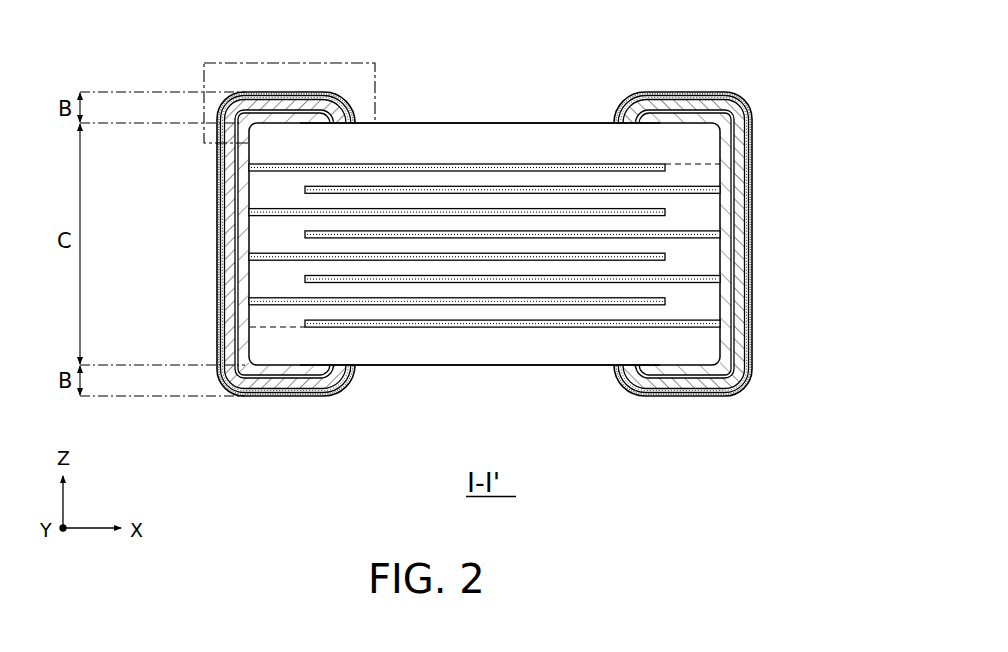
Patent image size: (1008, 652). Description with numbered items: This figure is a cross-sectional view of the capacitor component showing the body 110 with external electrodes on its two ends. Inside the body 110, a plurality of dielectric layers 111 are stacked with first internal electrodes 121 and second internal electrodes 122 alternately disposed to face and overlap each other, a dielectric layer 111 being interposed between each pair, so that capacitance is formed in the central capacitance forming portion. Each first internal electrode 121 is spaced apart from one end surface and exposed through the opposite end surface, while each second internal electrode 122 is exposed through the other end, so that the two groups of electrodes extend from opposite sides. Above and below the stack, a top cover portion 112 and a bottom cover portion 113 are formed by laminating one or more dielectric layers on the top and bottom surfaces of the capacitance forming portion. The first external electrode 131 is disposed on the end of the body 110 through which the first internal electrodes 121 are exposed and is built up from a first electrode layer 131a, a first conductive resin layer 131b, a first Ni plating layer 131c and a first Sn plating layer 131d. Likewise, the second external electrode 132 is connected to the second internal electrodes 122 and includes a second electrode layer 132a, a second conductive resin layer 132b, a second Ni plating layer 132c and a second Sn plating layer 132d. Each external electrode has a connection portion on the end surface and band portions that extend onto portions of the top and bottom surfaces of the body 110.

The body 110 is at (437, 123).
The dielectric layer 111 is at (385, 206).
The top cover portion 112 is at (472, 143).
The bottom cover portion 113 is at (488, 352).
The first internal electrode 121 is at (552, 171).
The second internal electrode 122 is at (585, 191).
The first external electrode 131 is at (224, 244).
The first electrode layer 131a is at (242, 242).
The first conductive resin layer 131b is at (234, 266).
The first Ni plating layer 131c is at (226, 292).
The first Sn plating layer 131d is at (219, 323).
The second external electrode 132 is at (749, 244).
The second electrode layer 132a is at (743, 233).
The second conductive resin layer 132b is at (750, 264).
The second Ni plating layer 132c is at (743, 291).
The second Sn plating layer 132d is at (750, 318).